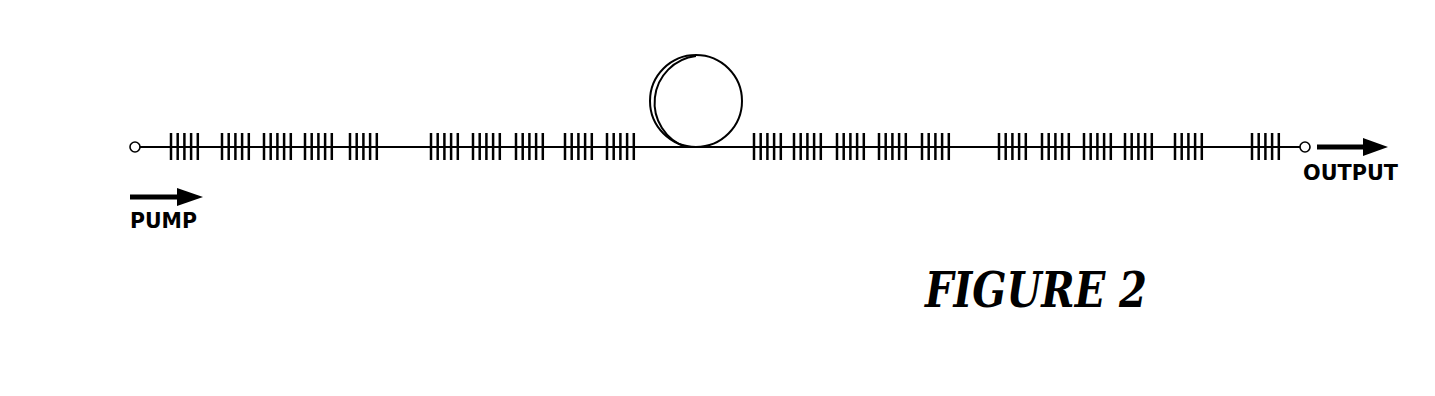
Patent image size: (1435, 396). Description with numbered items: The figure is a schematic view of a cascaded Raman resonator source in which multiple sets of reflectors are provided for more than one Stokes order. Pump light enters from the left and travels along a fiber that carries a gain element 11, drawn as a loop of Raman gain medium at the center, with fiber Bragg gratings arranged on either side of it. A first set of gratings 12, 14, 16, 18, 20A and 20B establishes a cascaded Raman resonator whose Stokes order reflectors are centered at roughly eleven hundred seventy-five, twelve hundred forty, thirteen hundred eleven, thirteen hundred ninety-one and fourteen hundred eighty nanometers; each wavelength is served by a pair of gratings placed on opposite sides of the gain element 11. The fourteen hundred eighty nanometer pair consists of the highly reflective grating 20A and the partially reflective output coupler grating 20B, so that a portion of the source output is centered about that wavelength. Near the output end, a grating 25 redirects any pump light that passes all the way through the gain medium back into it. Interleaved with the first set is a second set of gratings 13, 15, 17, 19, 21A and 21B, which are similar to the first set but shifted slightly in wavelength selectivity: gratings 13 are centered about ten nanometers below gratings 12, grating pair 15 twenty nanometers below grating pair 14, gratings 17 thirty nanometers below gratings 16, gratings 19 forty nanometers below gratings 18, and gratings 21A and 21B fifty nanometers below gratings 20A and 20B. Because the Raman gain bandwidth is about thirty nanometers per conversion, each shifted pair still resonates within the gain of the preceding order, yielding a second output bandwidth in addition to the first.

The gain element 11 is at (681, 53).
The gratings 12 is at (617, 127).
The gratings 13 is at (358, 127).
The grating pair 14 is at (578, 127).
The grating pair 15 is at (319, 127).
The gratings 16 is at (532, 127).
The gratings 17 is at (274, 127).
The gratings 18 is at (490, 127).
The gratings 19 is at (232, 127).
The highly reflective grating 20A is at (443, 127).
The partially reflective output coupler grating 20B is at (933, 127).
The grating 21A is at (188, 127).
The grating 21B is at (1185, 127).
The grating 25 is at (1265, 127).